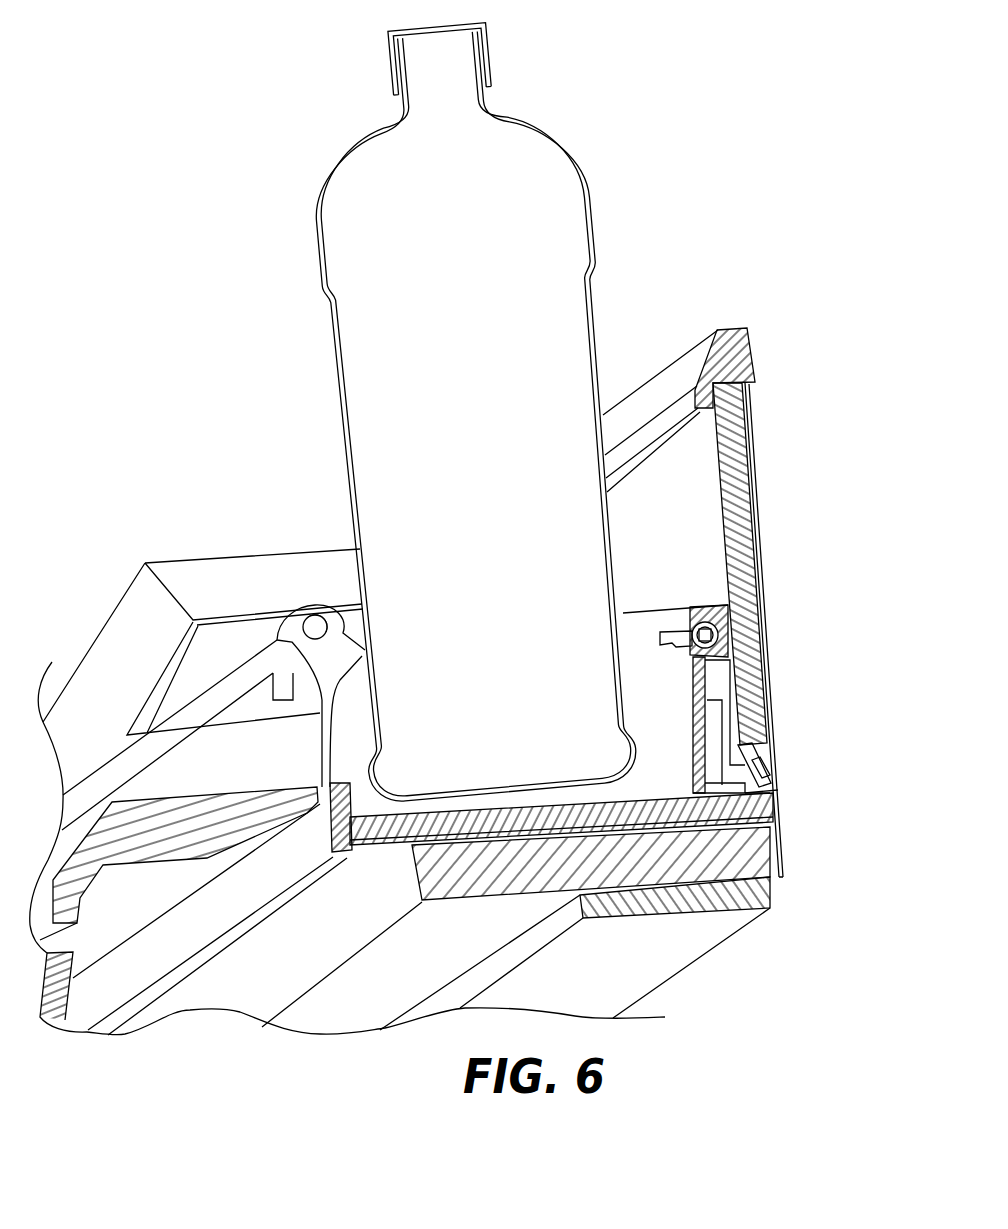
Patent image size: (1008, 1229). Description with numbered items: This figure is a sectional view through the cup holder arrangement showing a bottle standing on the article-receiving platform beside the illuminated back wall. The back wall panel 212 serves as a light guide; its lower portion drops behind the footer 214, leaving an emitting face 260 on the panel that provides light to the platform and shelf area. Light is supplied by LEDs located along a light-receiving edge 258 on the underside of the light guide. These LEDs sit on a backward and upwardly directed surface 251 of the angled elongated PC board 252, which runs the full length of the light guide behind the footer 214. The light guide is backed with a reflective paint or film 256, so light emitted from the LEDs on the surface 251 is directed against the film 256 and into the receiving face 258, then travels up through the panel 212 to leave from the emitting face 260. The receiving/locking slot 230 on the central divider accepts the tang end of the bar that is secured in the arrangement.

The emitting face 260 is at (658, 503).
The back wall panel 212 is at (742, 524).
The footer 214 is at (712, 607).
The receiving/locking slot 230 is at (660, 638).
The reflective film 256 is at (705, 718).
The light-receiving edge 258 is at (735, 760).
The backward and upwardly directed surface 251 is at (767, 757).
The PC board 252 is at (760, 778).